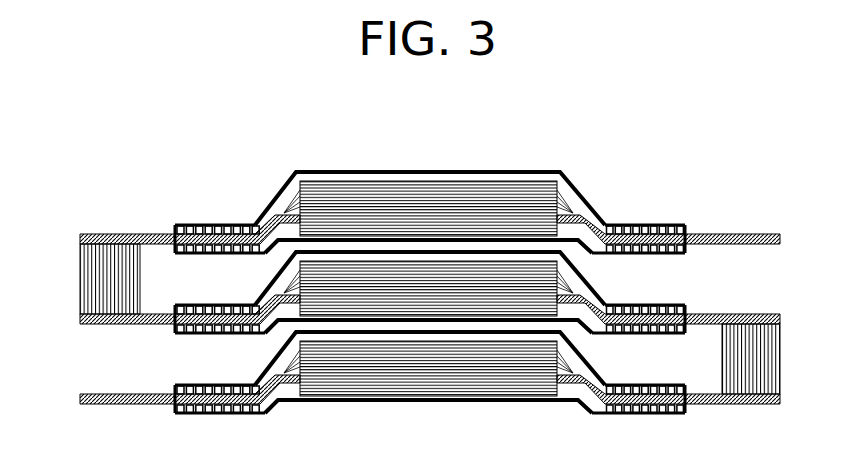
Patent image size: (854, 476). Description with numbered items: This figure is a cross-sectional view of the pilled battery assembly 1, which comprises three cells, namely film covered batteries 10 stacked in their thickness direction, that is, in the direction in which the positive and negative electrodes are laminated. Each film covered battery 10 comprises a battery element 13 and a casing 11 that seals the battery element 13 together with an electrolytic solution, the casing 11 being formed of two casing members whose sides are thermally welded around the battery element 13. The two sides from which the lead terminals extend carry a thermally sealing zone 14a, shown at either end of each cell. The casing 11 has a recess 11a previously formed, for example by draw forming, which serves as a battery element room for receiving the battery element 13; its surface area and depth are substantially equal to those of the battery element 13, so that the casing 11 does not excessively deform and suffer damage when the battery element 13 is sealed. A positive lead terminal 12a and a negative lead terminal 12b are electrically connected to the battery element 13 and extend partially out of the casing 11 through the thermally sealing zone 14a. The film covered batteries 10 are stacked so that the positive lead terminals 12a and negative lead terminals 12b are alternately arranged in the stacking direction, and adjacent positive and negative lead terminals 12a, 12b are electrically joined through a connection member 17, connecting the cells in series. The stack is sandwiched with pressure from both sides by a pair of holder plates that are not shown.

The pilled battery assembly 1 is at (221, 138).
The film covered battery 10 is at (363, 165).
The casing 11 is at (489, 170).
The recess 11a is at (575, 205).
The positive lead terminal 12a is at (98, 233).
The negative lead terminal 12b is at (737, 233).
The battery element 13 is at (405, 355).
The thermally sealing zone 14a is at (207, 224).
The connection member 17 is at (92, 288).